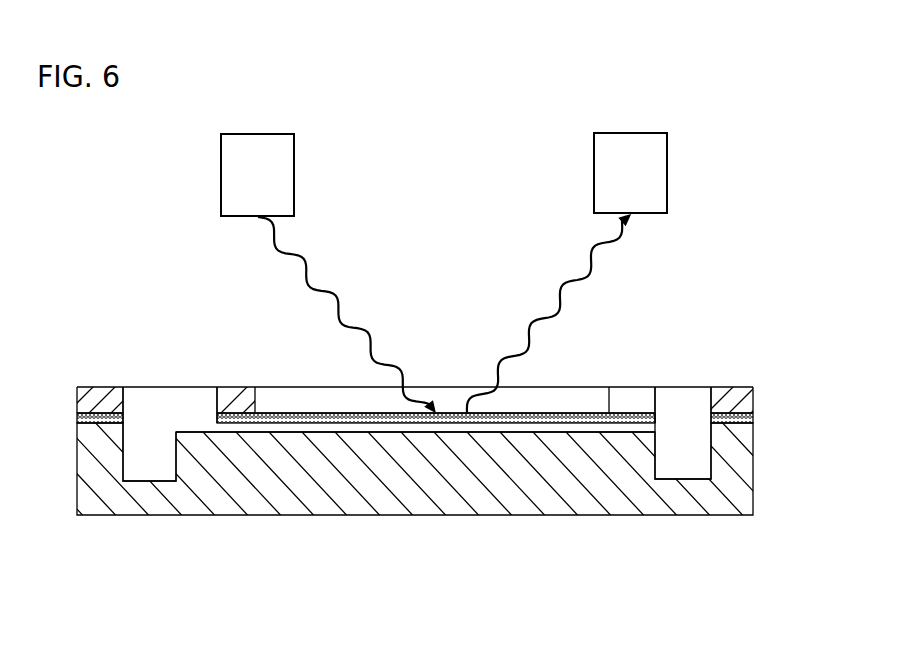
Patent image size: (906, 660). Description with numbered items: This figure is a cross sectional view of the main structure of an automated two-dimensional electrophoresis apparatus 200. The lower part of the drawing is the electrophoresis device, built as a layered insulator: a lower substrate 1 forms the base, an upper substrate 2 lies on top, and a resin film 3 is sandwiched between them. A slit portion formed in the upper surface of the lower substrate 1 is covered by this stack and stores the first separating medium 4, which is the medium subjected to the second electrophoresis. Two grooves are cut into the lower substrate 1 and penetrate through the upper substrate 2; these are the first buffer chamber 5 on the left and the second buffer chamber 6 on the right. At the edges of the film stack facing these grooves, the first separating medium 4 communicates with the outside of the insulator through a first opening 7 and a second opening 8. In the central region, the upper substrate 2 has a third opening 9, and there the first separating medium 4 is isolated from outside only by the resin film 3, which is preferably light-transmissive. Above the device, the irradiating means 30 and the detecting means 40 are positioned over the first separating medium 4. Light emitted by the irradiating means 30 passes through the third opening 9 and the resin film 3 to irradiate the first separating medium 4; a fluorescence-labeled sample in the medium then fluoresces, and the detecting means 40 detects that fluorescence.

The lower substrate 1 is at (750, 470).
The upper substrate 2 is at (754, 388).
The resin film 3 is at (754, 413).
The first separating medium 4 is at (325, 425).
The first buffer chamber 5 is at (138, 455).
The second buffer chamber 6 is at (688, 443).
The first opening 7 is at (216, 429).
The second opening 8 is at (658, 425).
The third opening 9 is at (277, 400).
The irradiating means 30 is at (286, 173).
The detecting means 40 is at (597, 158).
The automated two-dimensional electrophoresis apparatus 200 is at (758, 271).